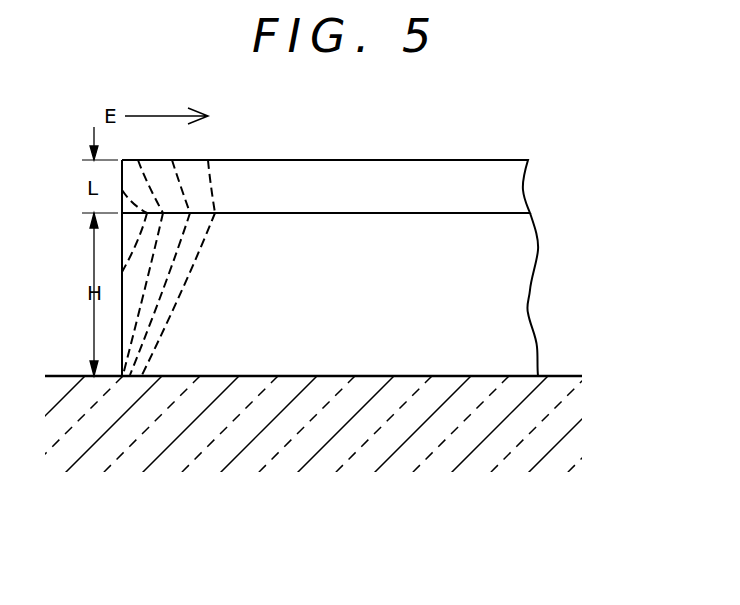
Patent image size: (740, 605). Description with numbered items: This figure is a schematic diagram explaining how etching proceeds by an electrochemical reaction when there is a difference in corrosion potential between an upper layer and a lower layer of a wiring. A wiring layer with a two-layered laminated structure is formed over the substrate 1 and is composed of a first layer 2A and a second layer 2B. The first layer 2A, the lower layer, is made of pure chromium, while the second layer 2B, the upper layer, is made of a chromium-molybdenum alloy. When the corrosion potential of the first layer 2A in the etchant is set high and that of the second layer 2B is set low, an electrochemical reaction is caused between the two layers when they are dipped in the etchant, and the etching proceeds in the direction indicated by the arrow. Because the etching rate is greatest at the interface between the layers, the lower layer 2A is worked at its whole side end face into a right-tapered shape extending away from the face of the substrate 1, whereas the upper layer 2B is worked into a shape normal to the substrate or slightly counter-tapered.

The substrate 1 is at (354, 445).
The first layer 2A is at (517, 290).
The second layer 2B is at (515, 187).